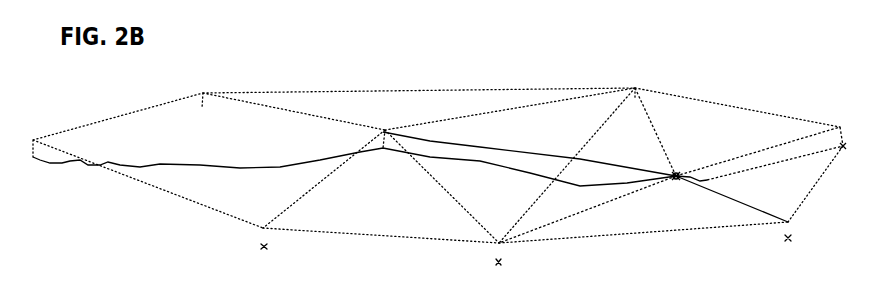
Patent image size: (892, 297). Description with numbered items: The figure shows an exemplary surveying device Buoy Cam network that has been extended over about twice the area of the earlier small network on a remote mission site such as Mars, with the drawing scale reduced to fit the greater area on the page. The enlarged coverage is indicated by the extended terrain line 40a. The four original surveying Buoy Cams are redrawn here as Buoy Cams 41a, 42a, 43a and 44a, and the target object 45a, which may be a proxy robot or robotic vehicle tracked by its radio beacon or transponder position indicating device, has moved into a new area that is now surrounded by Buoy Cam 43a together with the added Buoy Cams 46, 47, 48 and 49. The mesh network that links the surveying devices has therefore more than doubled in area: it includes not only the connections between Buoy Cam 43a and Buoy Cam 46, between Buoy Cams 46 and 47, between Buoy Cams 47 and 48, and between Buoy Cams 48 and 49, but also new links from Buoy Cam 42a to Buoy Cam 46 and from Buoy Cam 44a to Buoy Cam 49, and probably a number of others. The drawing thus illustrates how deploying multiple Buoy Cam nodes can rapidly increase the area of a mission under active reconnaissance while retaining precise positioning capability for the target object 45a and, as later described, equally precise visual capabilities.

The extended terrain line 40a is at (83, 165).
The Buoy Cam 41a is at (35, 138).
The Buoy Cam 42a is at (207, 91).
The Buoy Cam 43a is at (449, 165).
The Buoy Cam 44a is at (260, 231).
The target object 45a is at (678, 171).
The Buoy Cam 46 is at (637, 87).
The Buoy Cam 47 is at (841, 125).
The Buoy Cam 48 is at (790, 224).
The Buoy Cam 49 is at (503, 246).